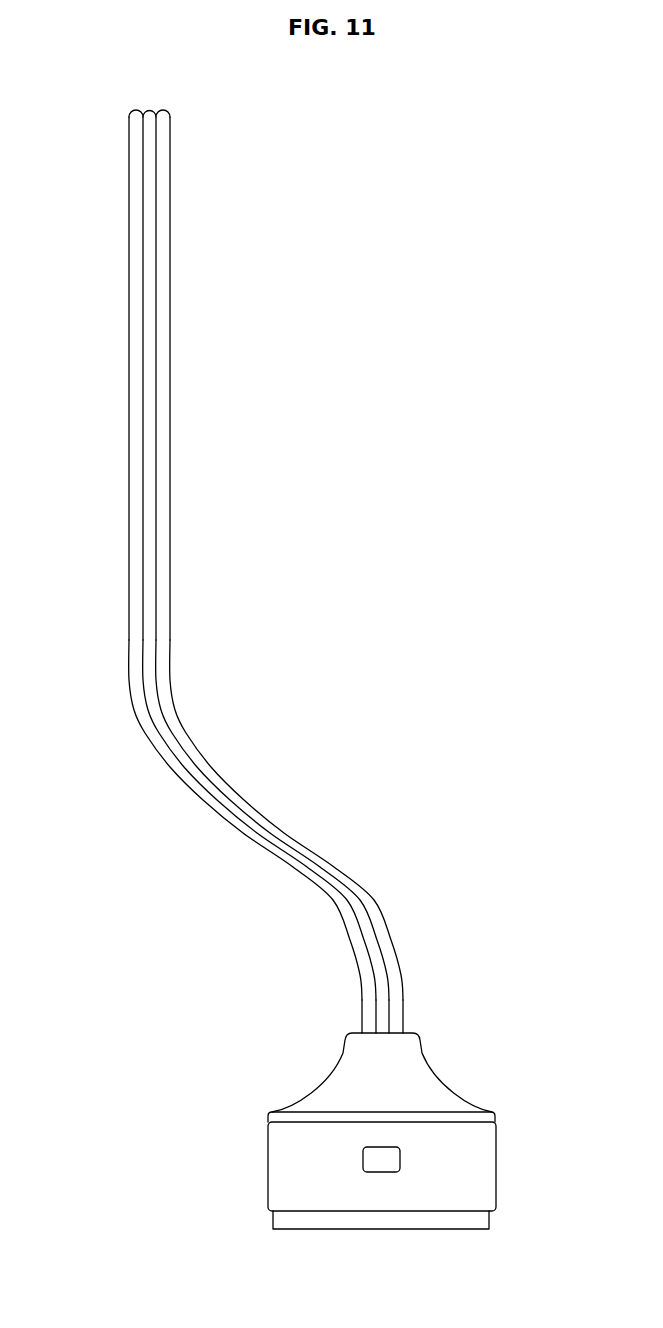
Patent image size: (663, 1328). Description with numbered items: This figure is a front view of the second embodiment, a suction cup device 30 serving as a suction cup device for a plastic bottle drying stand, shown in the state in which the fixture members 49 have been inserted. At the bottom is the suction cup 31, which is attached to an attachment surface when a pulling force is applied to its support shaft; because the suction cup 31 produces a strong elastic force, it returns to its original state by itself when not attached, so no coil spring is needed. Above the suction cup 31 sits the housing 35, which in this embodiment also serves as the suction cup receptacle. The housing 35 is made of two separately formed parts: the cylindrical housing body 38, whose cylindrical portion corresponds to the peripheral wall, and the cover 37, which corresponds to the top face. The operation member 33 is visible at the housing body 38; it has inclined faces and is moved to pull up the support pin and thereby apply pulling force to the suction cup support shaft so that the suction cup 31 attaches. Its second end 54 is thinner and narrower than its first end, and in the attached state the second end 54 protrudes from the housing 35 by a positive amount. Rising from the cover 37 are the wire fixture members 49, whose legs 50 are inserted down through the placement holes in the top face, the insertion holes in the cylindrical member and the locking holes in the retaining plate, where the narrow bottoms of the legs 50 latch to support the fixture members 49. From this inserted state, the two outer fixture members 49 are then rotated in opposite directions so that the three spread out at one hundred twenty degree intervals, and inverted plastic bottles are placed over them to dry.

The fixture member 49 is at (163, 175).
The legs 50 is at (370, 1013).
The cover 37 is at (425, 1070).
The suction cup device 30 is at (267, 1122).
The housing body 38 is at (275, 1170).
The housing 35 is at (497, 1133).
The operation member 33 is at (388, 1158).
The second end 54 is at (372, 1155).
The suction cup 31 is at (475, 1223).